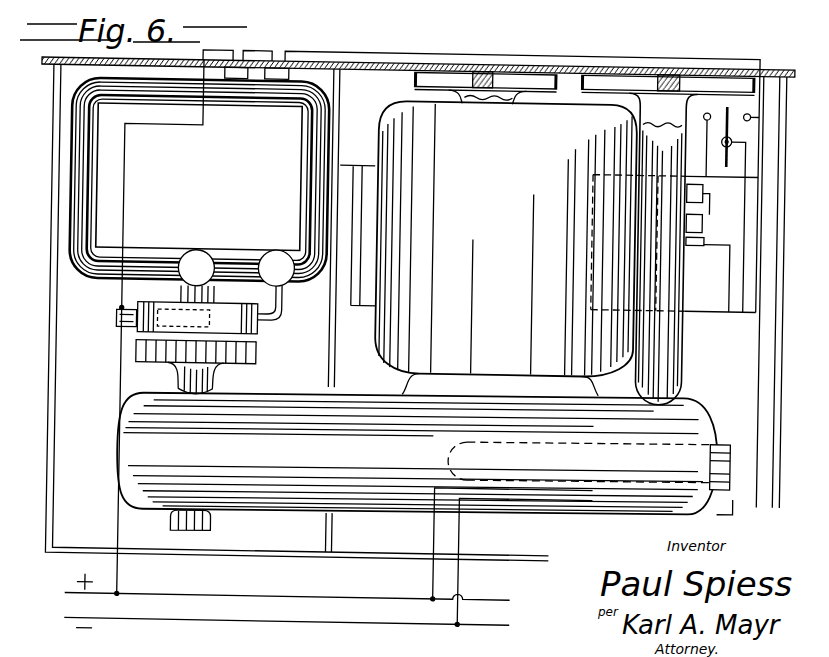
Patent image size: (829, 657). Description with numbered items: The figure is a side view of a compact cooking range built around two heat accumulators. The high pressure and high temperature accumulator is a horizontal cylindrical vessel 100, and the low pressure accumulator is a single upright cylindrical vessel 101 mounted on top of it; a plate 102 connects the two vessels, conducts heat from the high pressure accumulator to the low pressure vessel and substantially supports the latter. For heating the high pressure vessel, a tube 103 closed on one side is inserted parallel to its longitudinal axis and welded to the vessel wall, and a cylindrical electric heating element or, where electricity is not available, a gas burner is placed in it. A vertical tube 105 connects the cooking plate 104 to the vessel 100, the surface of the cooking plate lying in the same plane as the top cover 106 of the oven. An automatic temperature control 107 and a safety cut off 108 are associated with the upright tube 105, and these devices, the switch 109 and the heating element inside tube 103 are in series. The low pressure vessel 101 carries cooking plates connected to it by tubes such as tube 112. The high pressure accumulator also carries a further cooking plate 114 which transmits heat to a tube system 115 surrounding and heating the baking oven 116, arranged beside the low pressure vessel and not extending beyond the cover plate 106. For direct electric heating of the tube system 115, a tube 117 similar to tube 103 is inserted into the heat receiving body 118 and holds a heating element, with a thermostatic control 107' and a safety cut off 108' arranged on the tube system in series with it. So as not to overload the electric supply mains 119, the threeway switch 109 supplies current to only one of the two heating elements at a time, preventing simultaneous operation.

The cylindrical vessel 100 is at (424, 464).
The upright cylindrical vessel 101 is at (506, 239).
The plate 102 is at (424, 370).
The tube 103 is at (729, 428).
The cooking plate 104 is at (672, 61).
The vertical tube 105 is at (667, 314).
The top cover 106 is at (770, 58).
The automatic temperature control 107 is at (708, 263).
The safety cut off 108 is at (717, 199).
The thermostatic control 107' is at (228, 102).
The safety cut off 108' is at (277, 103).
The threeway switch 109 is at (734, 121).
The tube 112 is at (463, 90).
The cooking plate 114 is at (237, 350).
The tube system 115 is at (308, 181).
The baking oven 116 is at (199, 177).
The tube 117 is at (125, 325).
The heat receiving body 118 is at (141, 301).
The electric supply mains 119 is at (262, 594).